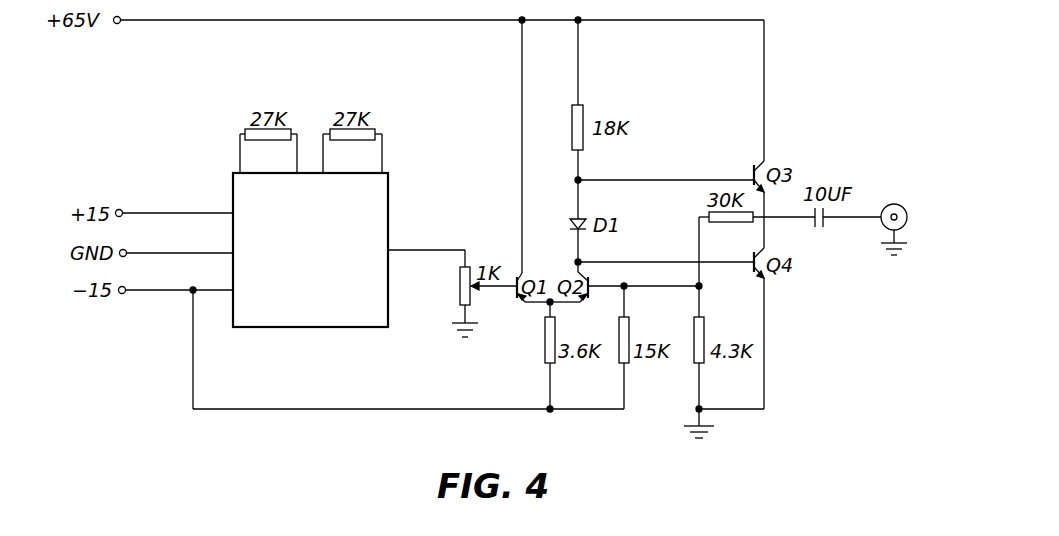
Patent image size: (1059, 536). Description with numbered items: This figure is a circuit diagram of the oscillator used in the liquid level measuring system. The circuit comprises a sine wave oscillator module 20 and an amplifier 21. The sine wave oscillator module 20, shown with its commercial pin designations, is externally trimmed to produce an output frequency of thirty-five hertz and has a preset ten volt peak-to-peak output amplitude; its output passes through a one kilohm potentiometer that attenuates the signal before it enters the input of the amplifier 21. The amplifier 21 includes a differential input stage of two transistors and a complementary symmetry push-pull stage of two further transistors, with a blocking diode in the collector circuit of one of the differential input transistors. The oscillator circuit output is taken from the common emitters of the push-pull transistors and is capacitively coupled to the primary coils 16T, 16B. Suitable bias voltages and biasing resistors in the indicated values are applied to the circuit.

The sine wave oscillator module 20 is at (325, 242).
The amplifier 21 is at (513, 272).
The primary coil 16T is at (886, 206).
The primary coil 16B is at (910, 219).